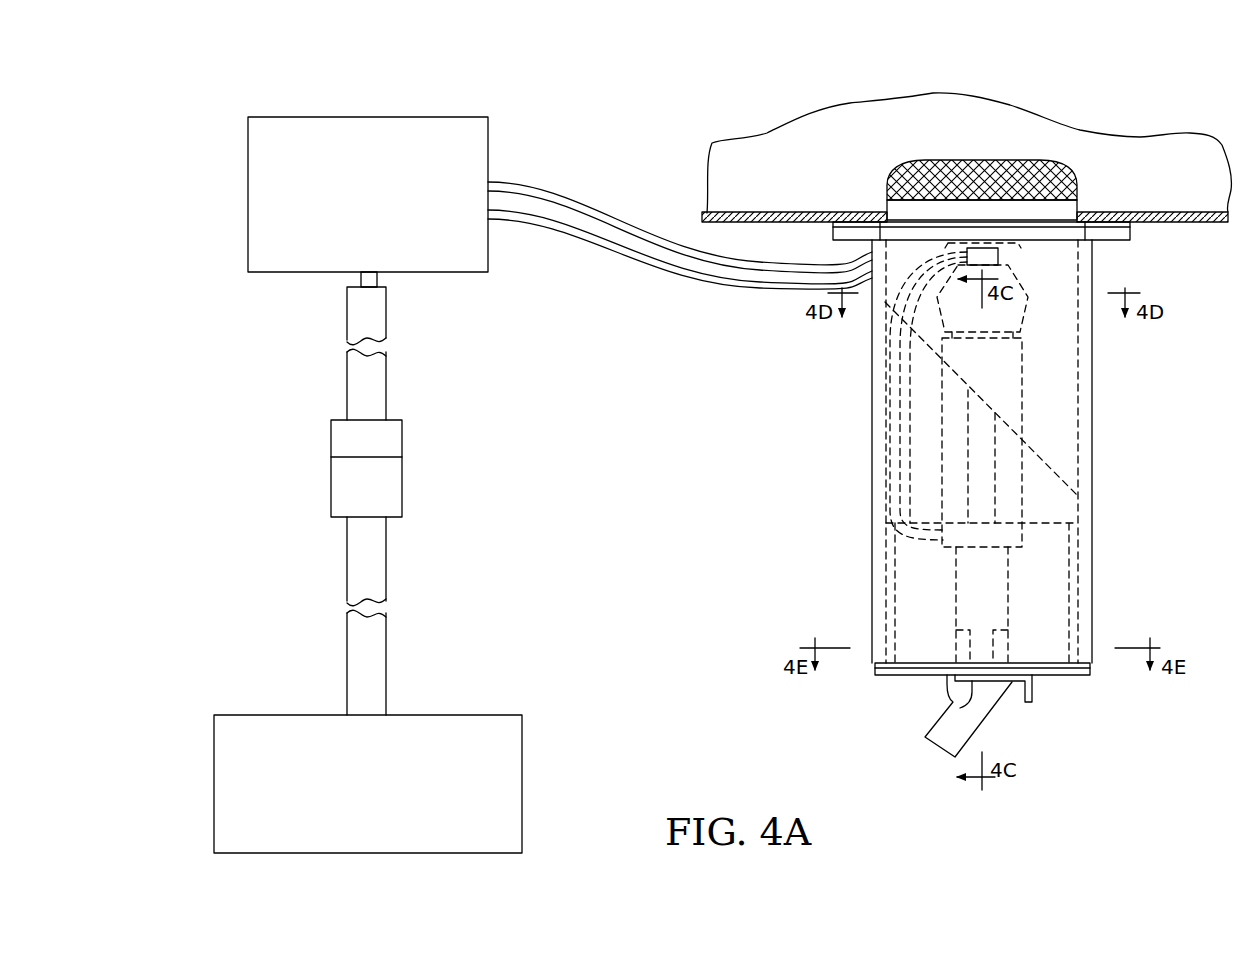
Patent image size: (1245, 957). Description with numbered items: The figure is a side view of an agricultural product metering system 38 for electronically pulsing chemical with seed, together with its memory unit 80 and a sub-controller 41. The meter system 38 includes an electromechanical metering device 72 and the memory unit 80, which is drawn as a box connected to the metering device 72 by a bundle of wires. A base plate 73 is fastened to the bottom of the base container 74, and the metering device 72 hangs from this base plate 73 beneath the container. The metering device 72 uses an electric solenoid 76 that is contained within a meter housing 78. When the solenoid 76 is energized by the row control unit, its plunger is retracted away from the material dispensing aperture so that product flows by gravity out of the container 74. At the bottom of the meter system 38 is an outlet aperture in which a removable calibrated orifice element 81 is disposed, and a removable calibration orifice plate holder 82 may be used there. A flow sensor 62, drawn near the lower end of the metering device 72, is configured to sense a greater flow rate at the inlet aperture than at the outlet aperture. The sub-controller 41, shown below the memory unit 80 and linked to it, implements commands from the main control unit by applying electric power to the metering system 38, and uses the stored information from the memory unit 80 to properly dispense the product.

The metering system 38 is at (625, 162).
The sub-controller 41 is at (522, 757).
The flow sensor 62 is at (1008, 645).
The metering device 72 is at (1102, 410).
The base plate 73 is at (1127, 226).
The base container 74 is at (1178, 147).
The electric solenoid 76 is at (1022, 465).
The meter housing 78 is at (1092, 555).
The memory unit 80 is at (272, 188).
The removable calibrated orifice element 81 is at (953, 702).
The removable calibration orifice plate holder 82 is at (1090, 676).